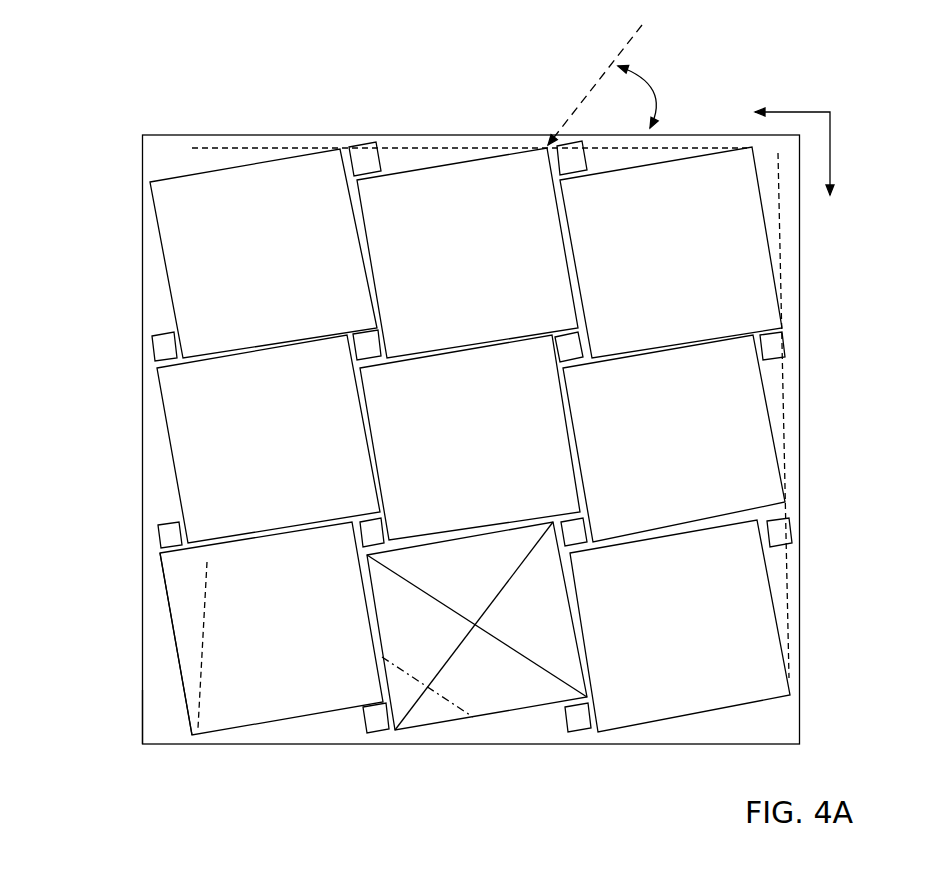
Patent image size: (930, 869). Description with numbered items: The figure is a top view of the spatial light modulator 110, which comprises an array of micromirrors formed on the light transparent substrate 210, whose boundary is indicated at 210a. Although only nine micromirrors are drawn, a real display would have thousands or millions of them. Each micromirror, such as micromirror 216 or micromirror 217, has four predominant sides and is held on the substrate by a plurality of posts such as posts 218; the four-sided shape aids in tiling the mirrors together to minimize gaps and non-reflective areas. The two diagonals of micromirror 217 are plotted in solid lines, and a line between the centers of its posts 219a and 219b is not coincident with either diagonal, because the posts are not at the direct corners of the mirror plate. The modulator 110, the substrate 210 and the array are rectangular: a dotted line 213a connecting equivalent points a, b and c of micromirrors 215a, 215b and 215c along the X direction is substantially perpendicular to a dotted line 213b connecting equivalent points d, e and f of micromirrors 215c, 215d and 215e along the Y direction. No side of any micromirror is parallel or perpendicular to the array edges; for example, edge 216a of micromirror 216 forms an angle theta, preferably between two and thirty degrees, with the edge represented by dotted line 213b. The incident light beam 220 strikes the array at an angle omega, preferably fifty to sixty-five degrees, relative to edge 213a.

The spatial light modulator 110 is at (453, 423).
The light transparent substrate 210 is at (222, 135).
The substrate edge 210a is at (142, 707).
The dotted line 213a is at (310, 148).
The dotted line 213b is at (785, 415).
The micromirror 215a is at (277, 261).
The micromirror 215b is at (487, 261).
The micromirror 215c is at (691, 258).
The micromirror 215d is at (700, 448).
The micromirror 215e is at (703, 633).
The micromirror 216 is at (305, 725).
The edge 216a is at (173, 635).
The micromirror 217 is at (507, 718).
The posts 218 is at (167, 535).
The post 219a is at (377, 530).
The post 219b is at (580, 728).
The incident light beam 220 is at (588, 92).